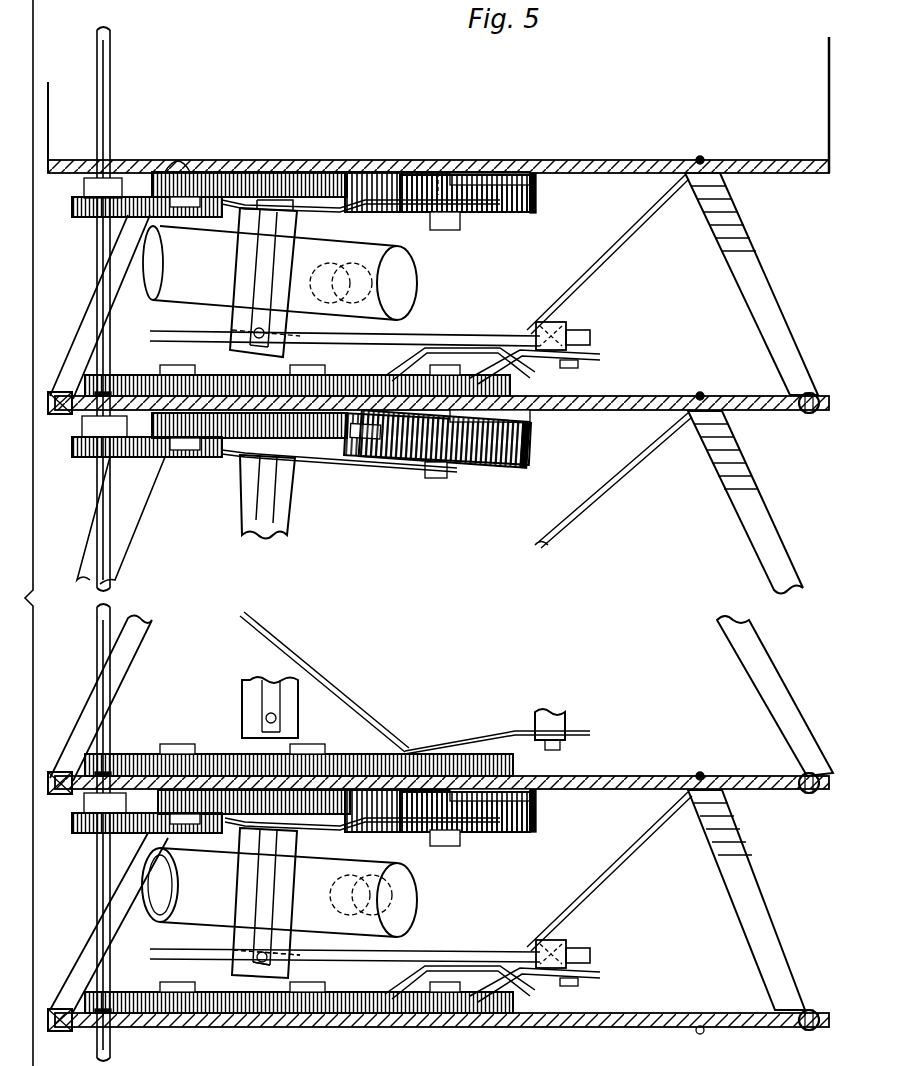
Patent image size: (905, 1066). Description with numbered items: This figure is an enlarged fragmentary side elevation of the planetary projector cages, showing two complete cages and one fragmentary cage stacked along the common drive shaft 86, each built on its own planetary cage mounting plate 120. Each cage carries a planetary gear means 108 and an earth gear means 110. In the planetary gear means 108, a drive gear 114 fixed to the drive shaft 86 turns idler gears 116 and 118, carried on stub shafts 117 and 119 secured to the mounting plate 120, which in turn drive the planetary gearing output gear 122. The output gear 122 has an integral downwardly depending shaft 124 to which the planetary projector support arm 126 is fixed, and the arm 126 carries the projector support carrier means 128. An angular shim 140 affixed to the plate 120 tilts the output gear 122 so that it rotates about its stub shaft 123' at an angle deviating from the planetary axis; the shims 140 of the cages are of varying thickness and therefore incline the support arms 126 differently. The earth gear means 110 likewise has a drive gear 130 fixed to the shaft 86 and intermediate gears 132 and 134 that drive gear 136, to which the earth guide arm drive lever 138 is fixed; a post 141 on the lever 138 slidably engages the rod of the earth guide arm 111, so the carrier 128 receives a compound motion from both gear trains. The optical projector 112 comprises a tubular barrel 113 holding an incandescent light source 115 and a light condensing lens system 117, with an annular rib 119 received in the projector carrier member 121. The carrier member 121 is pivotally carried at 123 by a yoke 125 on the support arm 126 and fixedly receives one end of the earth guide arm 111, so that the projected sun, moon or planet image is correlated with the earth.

The drive shaft 86 is at (108, 82).
The planetary gear means 108 is at (542, 220).
The earth gear means 110 is at (606, 388).
The earth guide arm 111 is at (468, 326).
The optical projector means 112 is at (416, 277).
The tubular barrel 113 is at (320, 872).
The drive gear 114 is at (95, 180).
The incandescent light source 115 is at (363, 878).
The idler gear 116 is at (222, 170).
The stub shaft / light condensing lens system 117 is at (183, 165).
The idler gear 118 is at (341, 168).
The stub shaft / annular rib 119 is at (272, 170).
The planetary cage mounting plate 120 is at (660, 162).
The projector carrier member 121 is at (236, 952).
The planetary gearing output gear 122 is at (530, 192).
The pivot 123 is at (301, 966).
The stub shaft 123' is at (431, 156).
The downwardly depending shaft 124 is at (460, 218).
The yoke 125 is at (266, 878).
The planetary projector support arm 126 is at (378, 216).
The projector support carrier means 128 is at (247, 273).
The drive gear 130 is at (50, 392).
The intermediate gear 132 is at (205, 375).
The intermediate gear 134 is at (345, 375).
The gear 136 is at (505, 382).
The earth guide arm drive lever 138 is at (588, 348).
The angular shim 140 is at (536, 170).
The post 141 is at (558, 325).